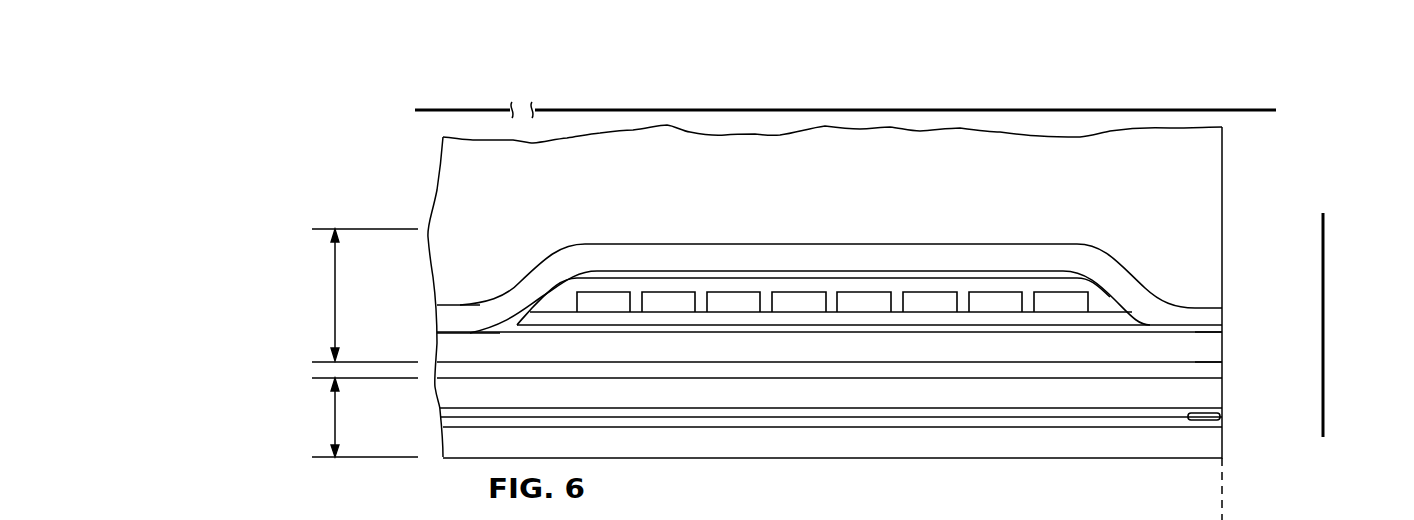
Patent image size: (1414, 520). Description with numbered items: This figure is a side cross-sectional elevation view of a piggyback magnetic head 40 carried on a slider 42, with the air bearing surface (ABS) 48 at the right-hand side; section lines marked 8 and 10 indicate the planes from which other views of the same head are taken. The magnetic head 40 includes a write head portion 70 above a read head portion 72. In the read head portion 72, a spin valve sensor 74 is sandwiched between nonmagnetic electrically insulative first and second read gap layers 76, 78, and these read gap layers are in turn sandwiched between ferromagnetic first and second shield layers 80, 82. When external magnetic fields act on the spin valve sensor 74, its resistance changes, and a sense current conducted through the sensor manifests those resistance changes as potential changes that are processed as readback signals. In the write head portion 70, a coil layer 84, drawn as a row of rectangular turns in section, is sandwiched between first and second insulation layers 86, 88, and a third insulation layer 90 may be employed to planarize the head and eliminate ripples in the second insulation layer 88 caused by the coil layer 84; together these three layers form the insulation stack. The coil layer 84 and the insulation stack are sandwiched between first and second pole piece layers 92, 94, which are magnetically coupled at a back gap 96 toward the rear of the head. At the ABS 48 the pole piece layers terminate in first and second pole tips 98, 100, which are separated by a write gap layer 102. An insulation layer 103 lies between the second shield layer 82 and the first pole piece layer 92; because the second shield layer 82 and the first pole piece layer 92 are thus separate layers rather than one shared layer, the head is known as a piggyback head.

The section line 8- 8 is at (1340, 427).
The section line 10- 10 is at (424, 62).
The piggyback magnetic head 40 is at (410, 135).
The overcoat layer 42 is at (1203, 157).
The air bearing surface (ABS) 48 is at (1222, 478).
The write head portion 70 is at (335, 295).
The read head portion 72 is at (335, 415).
The spin valve sensor 74 is at (1217, 417).
The first read gap layer 76 is at (828, 428).
The second read gap layer 78 is at (772, 404).
The first shield layer 80 is at (945, 445).
The second shield layer 82 is at (1057, 392).
The coil layer 84 is at (867, 300).
The first insulation layer 86 is at (680, 318).
The second insulation layer 88 is at (1102, 305).
The third insulation layer 90 is at (605, 282).
The first pole piece layer 92 is at (1125, 350).
The second pole piece layer 94 is at (980, 248).
The back gap 96 is at (458, 332).
The first pole tip 98 is at (1222, 350).
The second pole tip 100 is at (1217, 317).
The write gap layer 102 is at (1222, 325).
The insulation layer 103 is at (998, 370).